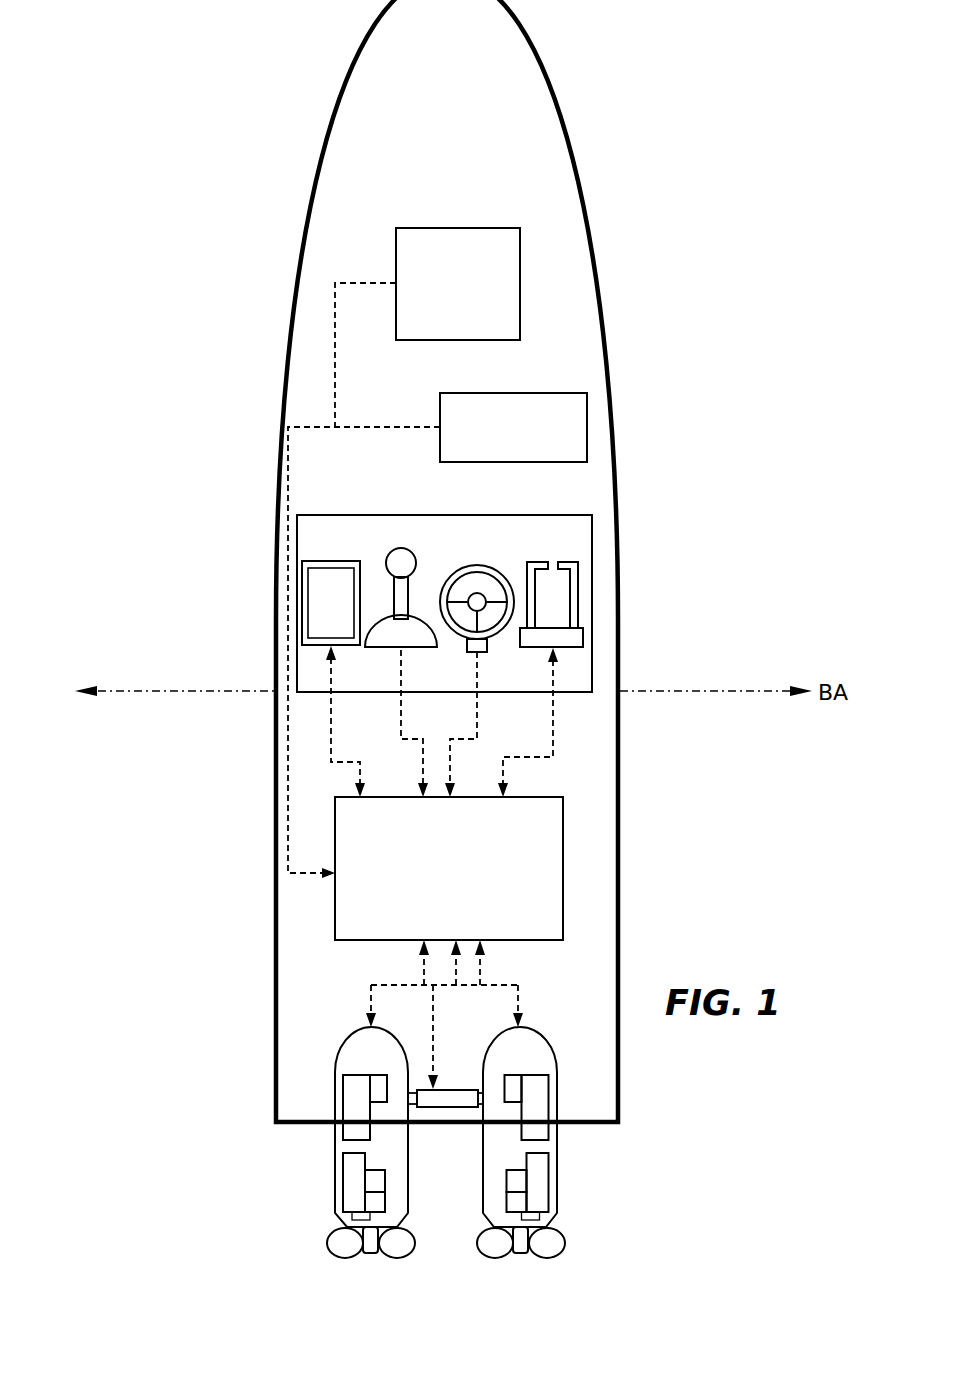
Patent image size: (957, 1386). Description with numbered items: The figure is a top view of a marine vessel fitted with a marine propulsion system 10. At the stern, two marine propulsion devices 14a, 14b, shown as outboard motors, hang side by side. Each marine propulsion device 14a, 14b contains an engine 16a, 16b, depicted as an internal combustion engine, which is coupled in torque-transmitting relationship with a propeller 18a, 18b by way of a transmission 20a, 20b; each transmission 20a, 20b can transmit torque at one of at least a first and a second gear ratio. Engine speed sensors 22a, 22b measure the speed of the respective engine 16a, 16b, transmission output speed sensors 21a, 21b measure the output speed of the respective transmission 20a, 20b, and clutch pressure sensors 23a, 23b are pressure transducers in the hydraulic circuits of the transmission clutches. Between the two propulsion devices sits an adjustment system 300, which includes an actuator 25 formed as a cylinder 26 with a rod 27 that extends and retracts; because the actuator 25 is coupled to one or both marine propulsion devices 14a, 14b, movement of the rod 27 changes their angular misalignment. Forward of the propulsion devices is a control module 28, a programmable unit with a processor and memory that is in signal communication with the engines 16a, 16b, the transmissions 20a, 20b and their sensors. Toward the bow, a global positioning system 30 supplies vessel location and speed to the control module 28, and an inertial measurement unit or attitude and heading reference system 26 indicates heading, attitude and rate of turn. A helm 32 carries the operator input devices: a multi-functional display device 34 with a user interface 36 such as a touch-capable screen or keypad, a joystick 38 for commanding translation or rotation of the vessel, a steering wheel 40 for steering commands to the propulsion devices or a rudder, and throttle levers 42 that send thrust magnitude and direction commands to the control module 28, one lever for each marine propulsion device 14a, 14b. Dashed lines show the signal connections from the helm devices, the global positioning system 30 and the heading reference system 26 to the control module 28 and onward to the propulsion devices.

The marine propulsion system 10 is at (602, 811).
The first marine propulsion device 14a is at (368, 1143).
The second marine propulsion device 14b is at (533, 1150).
The first engine 16a is at (338, 1128).
The second engine 16b is at (554, 1128).
The first propeller 18a is at (327, 1240).
The second propeller 18b is at (568, 1242).
The first transmission 20a is at (335, 1190).
The second transmission 20b is at (557, 1190).
The first transmission output speed sensor 21a is at (385, 1197).
The second transmission output speed sensor 21b is at (507, 1195).
The first engine speed sensor 22a is at (370, 1080).
The second engine speed sensor 22b is at (525, 1078).
The first clutch pressure sensor 23a is at (385, 1180).
The second clutch pressure sensor 23b is at (507, 1180).
The actuator 25 is at (416, 1082).
The inertial measurement unit / attitude and heading reference system; cylinder 26 is at (488, 393).
The rod 27 is at (478, 1094).
The control module 28 is at (563, 884).
The global positioning system 30 is at (460, 228).
The helm 32 is at (552, 515).
The multi-functional display device 34 is at (347, 561).
The user interface 36 is at (357, 609).
The joystick 38 is at (408, 594).
The steering wheel 40 is at (481, 566).
The throttle lever 42 is at (590, 586).
The adjustment system 300 is at (486, 1003).